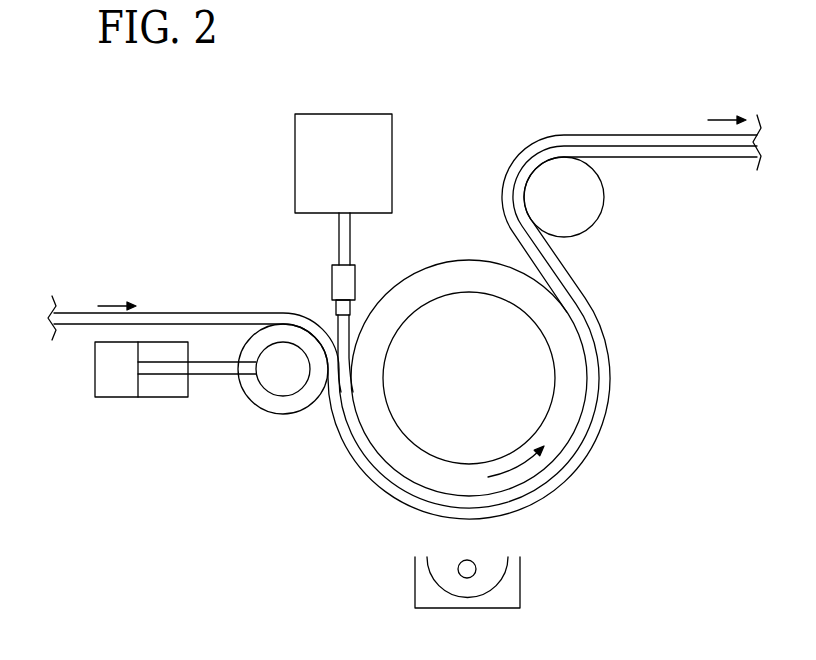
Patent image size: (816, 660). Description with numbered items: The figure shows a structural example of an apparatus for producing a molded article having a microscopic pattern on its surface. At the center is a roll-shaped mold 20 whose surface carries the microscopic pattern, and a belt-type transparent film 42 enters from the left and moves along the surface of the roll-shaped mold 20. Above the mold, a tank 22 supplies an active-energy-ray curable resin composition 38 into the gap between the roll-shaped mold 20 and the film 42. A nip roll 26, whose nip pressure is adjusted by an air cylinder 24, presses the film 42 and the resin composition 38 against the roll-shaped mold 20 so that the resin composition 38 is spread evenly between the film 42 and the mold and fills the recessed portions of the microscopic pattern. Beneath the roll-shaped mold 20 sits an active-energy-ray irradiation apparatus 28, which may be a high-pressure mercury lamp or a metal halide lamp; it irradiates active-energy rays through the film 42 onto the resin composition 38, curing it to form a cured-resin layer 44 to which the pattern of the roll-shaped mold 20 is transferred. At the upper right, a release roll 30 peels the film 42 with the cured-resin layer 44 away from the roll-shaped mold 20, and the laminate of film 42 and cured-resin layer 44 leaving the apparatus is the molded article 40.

The roll-shaped mold 20 is at (460, 258).
The tank 22 is at (295, 158).
The air cylinder 24 is at (158, 397).
The nip roll 26 is at (283, 413).
The active-energy-ray irradiation apparatus 28 is at (522, 579).
The release roll 30 is at (604, 198).
The active-energy-ray curable resin composition 38 is at (333, 318).
The molded article 40 is at (680, 58).
The film 42 is at (198, 312).
The cured-resin layer 44 is at (608, 133).